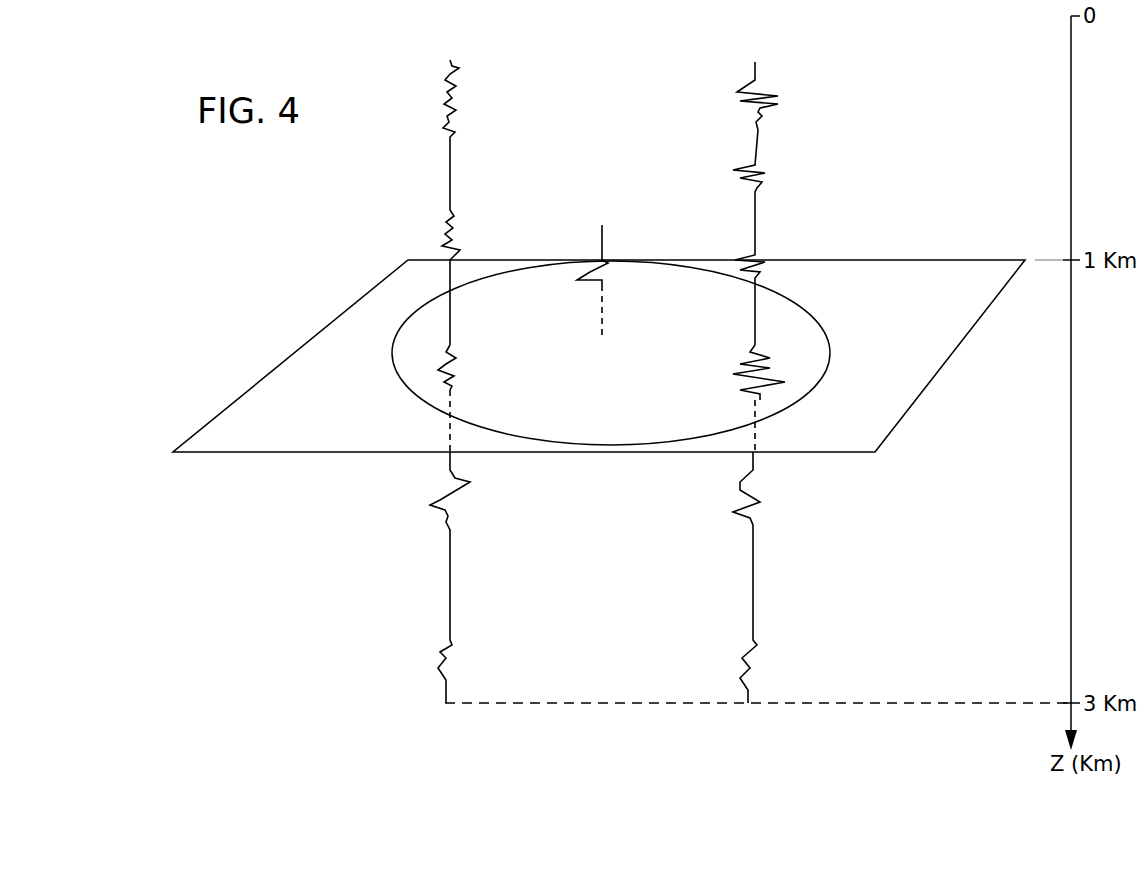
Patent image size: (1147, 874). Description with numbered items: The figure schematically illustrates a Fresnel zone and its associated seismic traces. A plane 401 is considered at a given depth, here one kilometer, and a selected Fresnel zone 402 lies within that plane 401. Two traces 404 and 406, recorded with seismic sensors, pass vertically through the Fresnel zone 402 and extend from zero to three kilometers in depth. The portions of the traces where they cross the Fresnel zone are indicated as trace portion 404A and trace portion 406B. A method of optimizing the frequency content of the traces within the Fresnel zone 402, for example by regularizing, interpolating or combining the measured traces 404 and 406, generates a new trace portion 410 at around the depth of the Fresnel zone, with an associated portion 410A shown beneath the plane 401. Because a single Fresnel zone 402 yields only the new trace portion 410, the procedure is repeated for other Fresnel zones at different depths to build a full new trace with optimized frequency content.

The plane 401 is at (925, 258).
The Fresnel zone 402 is at (820, 305).
The trace 404 is at (468, 56).
The portion of first well log within region 404A is at (455, 383).
The trace 406 is at (757, 76).
The portion of second well log within region 406B is at (775, 388).
The new trace portion 410 is at (600, 264).
The projected portion of pseudo well log 410A is at (600, 289).